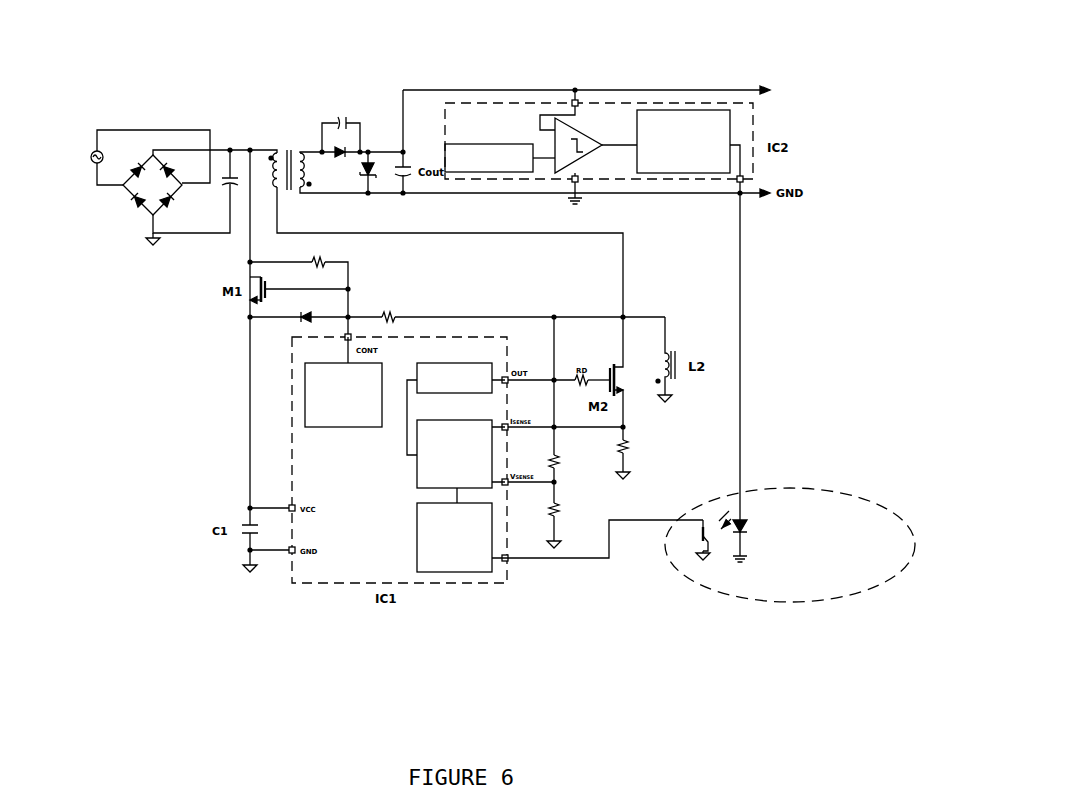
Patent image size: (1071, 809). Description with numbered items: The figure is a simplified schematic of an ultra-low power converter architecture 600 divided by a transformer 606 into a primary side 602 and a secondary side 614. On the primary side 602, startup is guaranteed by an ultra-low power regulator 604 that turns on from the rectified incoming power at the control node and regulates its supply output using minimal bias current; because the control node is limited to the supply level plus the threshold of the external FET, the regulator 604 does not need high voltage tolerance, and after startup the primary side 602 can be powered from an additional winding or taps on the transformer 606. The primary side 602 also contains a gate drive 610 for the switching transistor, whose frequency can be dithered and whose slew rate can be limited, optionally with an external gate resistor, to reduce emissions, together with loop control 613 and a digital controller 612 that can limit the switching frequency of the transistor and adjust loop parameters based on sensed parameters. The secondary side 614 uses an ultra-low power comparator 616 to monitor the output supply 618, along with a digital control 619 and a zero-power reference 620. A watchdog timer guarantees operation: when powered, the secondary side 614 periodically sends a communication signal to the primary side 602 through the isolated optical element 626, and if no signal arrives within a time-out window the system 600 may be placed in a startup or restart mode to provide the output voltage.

The ultra-low power converter architecture 600 is at (441, 680).
The primary side 602 is at (90, 361).
The ultra-low power regulator 604 is at (354, 431).
The transformer 606 is at (291, 127).
The gate drive 610 is at (464, 361).
The digital controller 612 is at (471, 576).
The loop control 613 is at (413, 478).
The secondary side 614 is at (590, 67).
The ultra-low power comparator 616 is at (594, 154).
The output supply 618 is at (810, 70).
The digital control 619 is at (693, 104).
The zero-power reference 620 is at (481, 139).
The optical element 626 is at (719, 592).